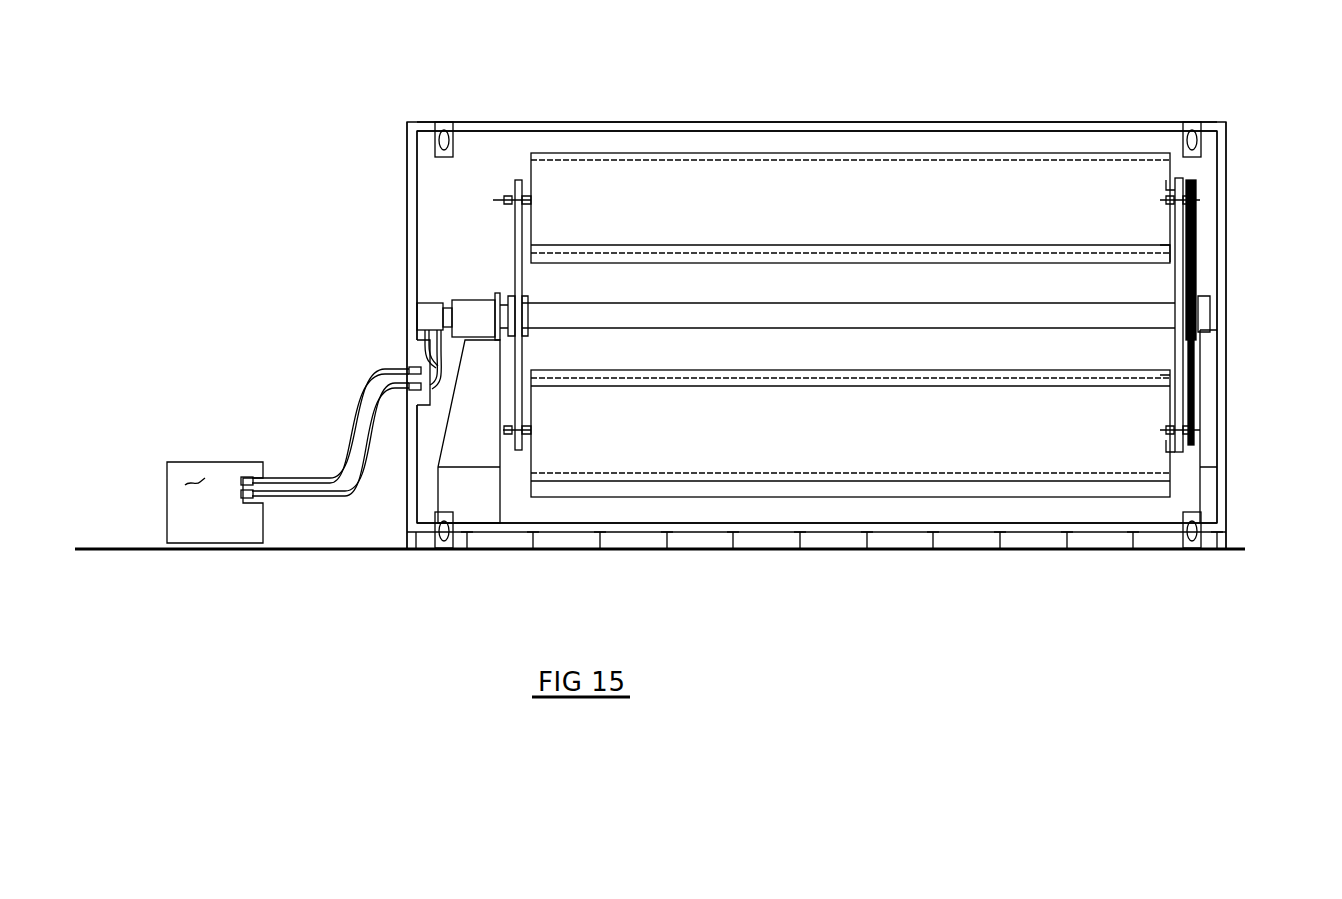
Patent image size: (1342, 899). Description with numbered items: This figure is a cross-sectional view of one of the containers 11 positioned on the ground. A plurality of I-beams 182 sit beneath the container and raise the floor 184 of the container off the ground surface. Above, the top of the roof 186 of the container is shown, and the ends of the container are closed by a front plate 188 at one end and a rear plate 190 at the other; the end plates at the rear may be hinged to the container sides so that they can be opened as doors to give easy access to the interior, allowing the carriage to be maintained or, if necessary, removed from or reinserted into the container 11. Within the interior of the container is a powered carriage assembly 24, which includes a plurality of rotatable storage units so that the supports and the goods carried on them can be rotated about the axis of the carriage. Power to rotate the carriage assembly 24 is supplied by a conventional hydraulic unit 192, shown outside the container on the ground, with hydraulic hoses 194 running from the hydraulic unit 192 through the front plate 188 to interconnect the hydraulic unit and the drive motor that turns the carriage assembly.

The container 11 is at (1050, 105).
The powered carriage assembly 24 is at (655, 186).
The I-beams 182 is at (803, 540).
The floor 184 is at (963, 525).
The roof 186 is at (876, 128).
The front plate 188 is at (409, 163).
The rear plate 190 is at (1232, 172).
The hydraulic unit 192 is at (207, 478).
The hydraulic hoses 194 is at (370, 362).